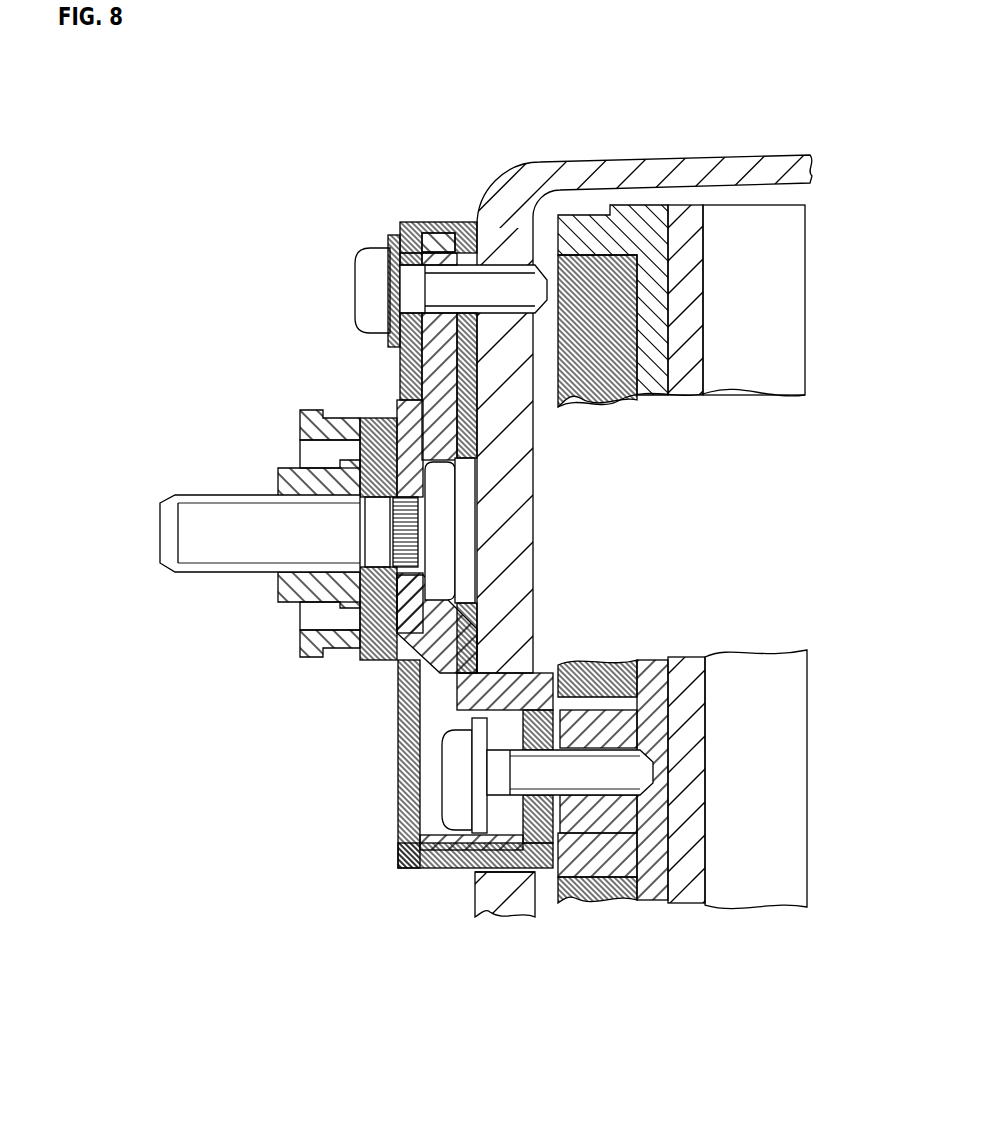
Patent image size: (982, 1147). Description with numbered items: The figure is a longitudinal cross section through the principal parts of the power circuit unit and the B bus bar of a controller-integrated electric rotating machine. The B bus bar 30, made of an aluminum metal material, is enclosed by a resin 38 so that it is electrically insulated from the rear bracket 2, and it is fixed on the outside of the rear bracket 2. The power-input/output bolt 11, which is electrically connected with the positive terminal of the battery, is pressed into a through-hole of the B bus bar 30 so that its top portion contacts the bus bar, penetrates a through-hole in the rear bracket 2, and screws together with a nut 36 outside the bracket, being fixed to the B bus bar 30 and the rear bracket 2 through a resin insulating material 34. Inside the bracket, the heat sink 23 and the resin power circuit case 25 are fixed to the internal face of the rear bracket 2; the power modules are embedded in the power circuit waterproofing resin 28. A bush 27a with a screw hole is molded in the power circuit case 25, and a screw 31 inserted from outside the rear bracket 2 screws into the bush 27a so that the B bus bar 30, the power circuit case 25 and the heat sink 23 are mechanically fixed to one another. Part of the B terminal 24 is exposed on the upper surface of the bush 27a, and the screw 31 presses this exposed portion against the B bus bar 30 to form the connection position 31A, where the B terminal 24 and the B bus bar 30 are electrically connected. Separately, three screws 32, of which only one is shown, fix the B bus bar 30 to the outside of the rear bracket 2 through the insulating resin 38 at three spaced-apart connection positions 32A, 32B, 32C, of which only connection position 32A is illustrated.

The rear bracket 2 is at (505, 202).
The power-input/output bolt 11 is at (233, 558).
The heat sink 23 is at (700, 390).
The B terminal 24 is at (587, 880).
The power circuit case 25 is at (645, 400).
The bush 27a is at (640, 840).
The power circuit waterproofing resin 28 is at (597, 392).
The B bus bar 30 is at (400, 367).
The screw 31 is at (453, 787).
The connection position 31A is at (477, 872).
The screw 32 is at (375, 287).
The connection position 32A is at (293, 219).
The connection position 32B is at (293, 219).
The connection position 32C is at (390, 238).
The resin insulating material 34 is at (317, 527).
The nut 36 is at (283, 598).
The resin 38 is at (398, 393).